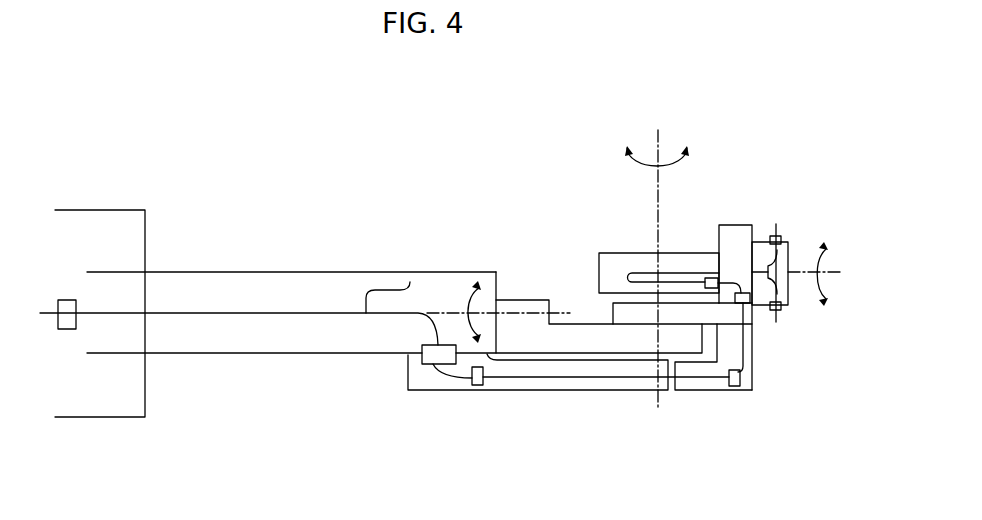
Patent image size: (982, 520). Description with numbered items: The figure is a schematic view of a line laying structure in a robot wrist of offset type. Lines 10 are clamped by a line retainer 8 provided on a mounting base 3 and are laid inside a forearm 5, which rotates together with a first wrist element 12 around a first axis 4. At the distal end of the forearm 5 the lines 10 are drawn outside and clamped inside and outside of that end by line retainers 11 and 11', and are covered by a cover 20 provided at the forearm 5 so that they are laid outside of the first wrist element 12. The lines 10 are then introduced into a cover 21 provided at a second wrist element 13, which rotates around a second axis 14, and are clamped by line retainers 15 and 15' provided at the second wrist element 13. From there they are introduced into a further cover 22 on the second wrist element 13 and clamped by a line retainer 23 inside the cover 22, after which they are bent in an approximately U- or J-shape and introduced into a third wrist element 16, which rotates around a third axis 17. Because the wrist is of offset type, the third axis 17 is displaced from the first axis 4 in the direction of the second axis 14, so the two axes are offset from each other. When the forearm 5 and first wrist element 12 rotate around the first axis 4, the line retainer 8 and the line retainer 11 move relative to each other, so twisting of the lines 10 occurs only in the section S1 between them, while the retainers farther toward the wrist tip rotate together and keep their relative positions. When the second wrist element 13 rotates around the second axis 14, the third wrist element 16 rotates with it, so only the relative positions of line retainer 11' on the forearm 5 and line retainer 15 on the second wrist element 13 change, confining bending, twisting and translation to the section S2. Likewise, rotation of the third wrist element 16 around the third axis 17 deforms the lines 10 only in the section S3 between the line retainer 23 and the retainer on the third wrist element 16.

The mounting base 3 is at (118, 212).
The forearm 5 is at (228, 272).
The line retainer 8 is at (66, 300).
The lines 10 is at (410, 282).
The first axis 4 is at (505, 313).
The first wrist element 12 is at (527, 300).
The line retainer 11 is at (400, 379).
The line retainer 11' is at (460, 407).
The cover 20 is at (540, 391).
The second axis 14 is at (657, 128).
The cover 22 is at (649, 253).
The line retainer 23 is at (703, 274).
The second wrist element 13 is at (730, 224).
The third wrist element 16 is at (758, 242).
The third axis 17 is at (826, 275).
The line retainer 15' is at (774, 335).
The line retainer 15 is at (640, 406).
The cover 21 is at (703, 389).
The section S1 is at (313, 300).
The section S2 is at (606, 388).
The section S3 is at (630, 261).